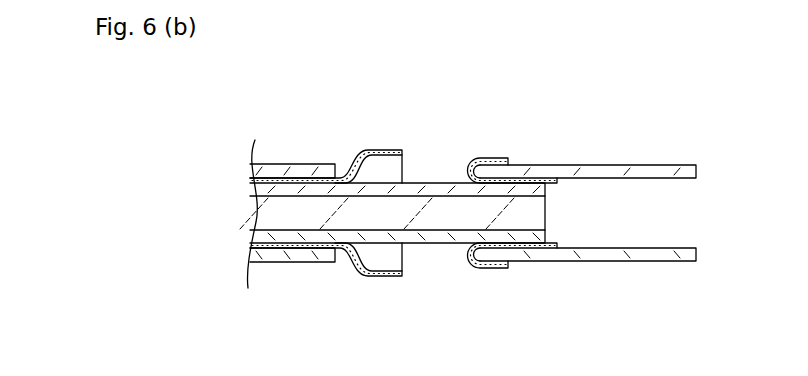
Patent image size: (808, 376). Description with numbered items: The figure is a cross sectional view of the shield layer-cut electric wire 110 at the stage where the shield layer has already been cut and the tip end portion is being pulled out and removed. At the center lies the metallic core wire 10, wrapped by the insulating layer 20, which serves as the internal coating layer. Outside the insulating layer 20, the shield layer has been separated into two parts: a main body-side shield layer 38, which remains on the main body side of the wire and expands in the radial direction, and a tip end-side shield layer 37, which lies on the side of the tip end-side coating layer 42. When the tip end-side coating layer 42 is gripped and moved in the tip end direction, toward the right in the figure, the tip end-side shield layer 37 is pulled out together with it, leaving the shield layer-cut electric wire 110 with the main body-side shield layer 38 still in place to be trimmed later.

The shield layer-cut electric wire 110 is at (312, 276).
The core wire 10 is at (275, 212).
The insulating layer 20 is at (258, 190).
The main body-side shield layer 38 is at (382, 149).
The tip end-side shield layer 37 is at (495, 158).
The tip end-side coating layer 42 is at (672, 165).